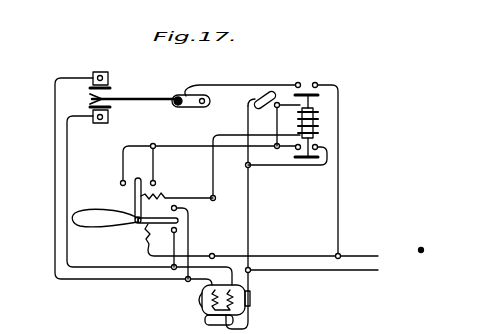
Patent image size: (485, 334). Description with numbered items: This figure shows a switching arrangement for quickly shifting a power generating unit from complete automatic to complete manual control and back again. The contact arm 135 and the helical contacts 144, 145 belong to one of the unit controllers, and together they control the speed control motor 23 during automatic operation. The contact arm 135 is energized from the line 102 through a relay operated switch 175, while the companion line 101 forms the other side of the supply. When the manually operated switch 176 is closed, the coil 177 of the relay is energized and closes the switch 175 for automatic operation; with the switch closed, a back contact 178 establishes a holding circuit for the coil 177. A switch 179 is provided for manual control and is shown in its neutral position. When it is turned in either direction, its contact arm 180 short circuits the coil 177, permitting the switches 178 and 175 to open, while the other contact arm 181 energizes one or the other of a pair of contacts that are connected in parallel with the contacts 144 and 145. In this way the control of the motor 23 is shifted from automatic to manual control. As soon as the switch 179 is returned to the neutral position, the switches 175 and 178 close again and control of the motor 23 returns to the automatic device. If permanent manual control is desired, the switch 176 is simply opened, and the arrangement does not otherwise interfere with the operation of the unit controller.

The helical contact 144 is at (94, 72).
The helical contact 145 is at (94, 124).
The contact arm 135 is at (146, 97).
The manually operated switch 176 is at (256, 98).
The relay operated switch 175 is at (312, 81).
The relay coil 177 is at (318, 122).
The back contact 178 is at (292, 160).
The manual control switch 179 is at (113, 225).
The contact arm 180 is at (134, 197).
The contact arm 181 is at (161, 214).
The line 102 is at (362, 256).
The line 101 is at (362, 271).
The speed control motor 23 is at (250, 298).